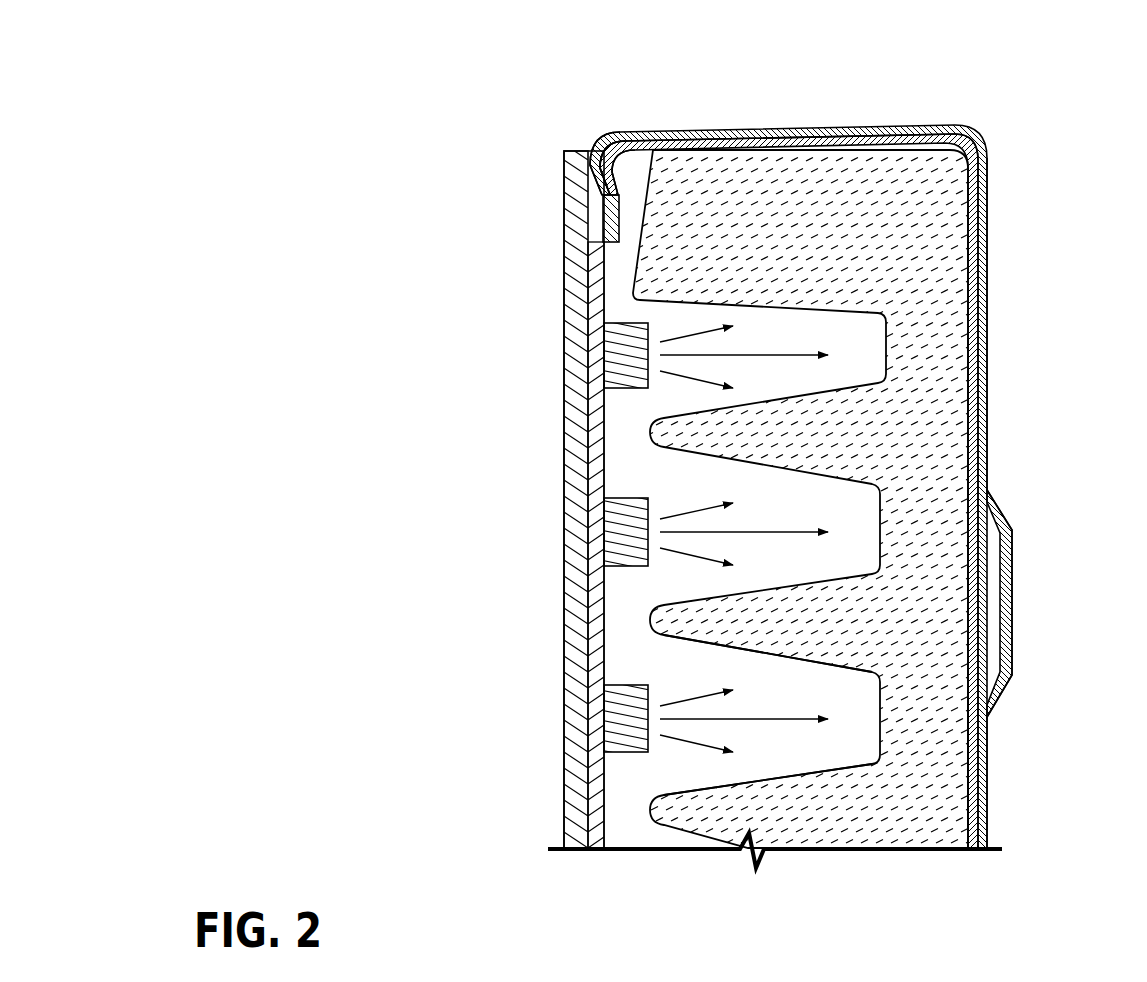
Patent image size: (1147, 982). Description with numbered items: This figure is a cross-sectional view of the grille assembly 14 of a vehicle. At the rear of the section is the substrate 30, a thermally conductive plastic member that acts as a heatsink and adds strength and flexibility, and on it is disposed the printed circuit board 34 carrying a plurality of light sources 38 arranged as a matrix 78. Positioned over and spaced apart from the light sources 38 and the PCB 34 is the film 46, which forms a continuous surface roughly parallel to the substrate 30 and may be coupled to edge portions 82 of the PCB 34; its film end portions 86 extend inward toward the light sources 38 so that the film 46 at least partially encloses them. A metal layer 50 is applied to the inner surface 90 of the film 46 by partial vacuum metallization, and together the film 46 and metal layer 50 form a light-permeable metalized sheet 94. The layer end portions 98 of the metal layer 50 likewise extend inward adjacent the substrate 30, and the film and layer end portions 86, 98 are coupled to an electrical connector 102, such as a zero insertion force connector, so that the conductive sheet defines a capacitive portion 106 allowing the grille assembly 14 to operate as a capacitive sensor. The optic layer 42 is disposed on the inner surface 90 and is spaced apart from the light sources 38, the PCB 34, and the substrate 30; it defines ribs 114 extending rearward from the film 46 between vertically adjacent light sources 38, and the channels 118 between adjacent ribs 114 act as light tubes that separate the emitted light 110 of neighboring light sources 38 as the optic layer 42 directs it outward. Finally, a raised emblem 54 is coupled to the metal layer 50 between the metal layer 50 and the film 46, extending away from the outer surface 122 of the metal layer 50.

The grille assembly 14 is at (1024, 149).
The substrate 30 is at (577, 220).
The printed circuit board 34 is at (592, 797).
The light sources 38 is at (620, 352).
The optic layer 42 is at (827, 805).
The film 46 is at (987, 252).
The metal layer 50 is at (972, 302).
The emblem 54 is at (1007, 600).
The matrix of light sources 78 is at (623, 778).
The edge portions of the PCB 82 is at (592, 208).
The film end portions 86 is at (592, 152).
The inner surface of the film 90 is at (967, 755).
The metalized sheet 94 is at (993, 393).
The layer end portions 98 is at (620, 167).
The electrical connector 102 is at (622, 200).
The capacitive portion 106 is at (1021, 485).
The emitted light 110 is at (730, 750).
The ribs 114 is at (767, 622).
The channels 118 is at (783, 747).
The outer surface of the metal layer 122 is at (987, 797).